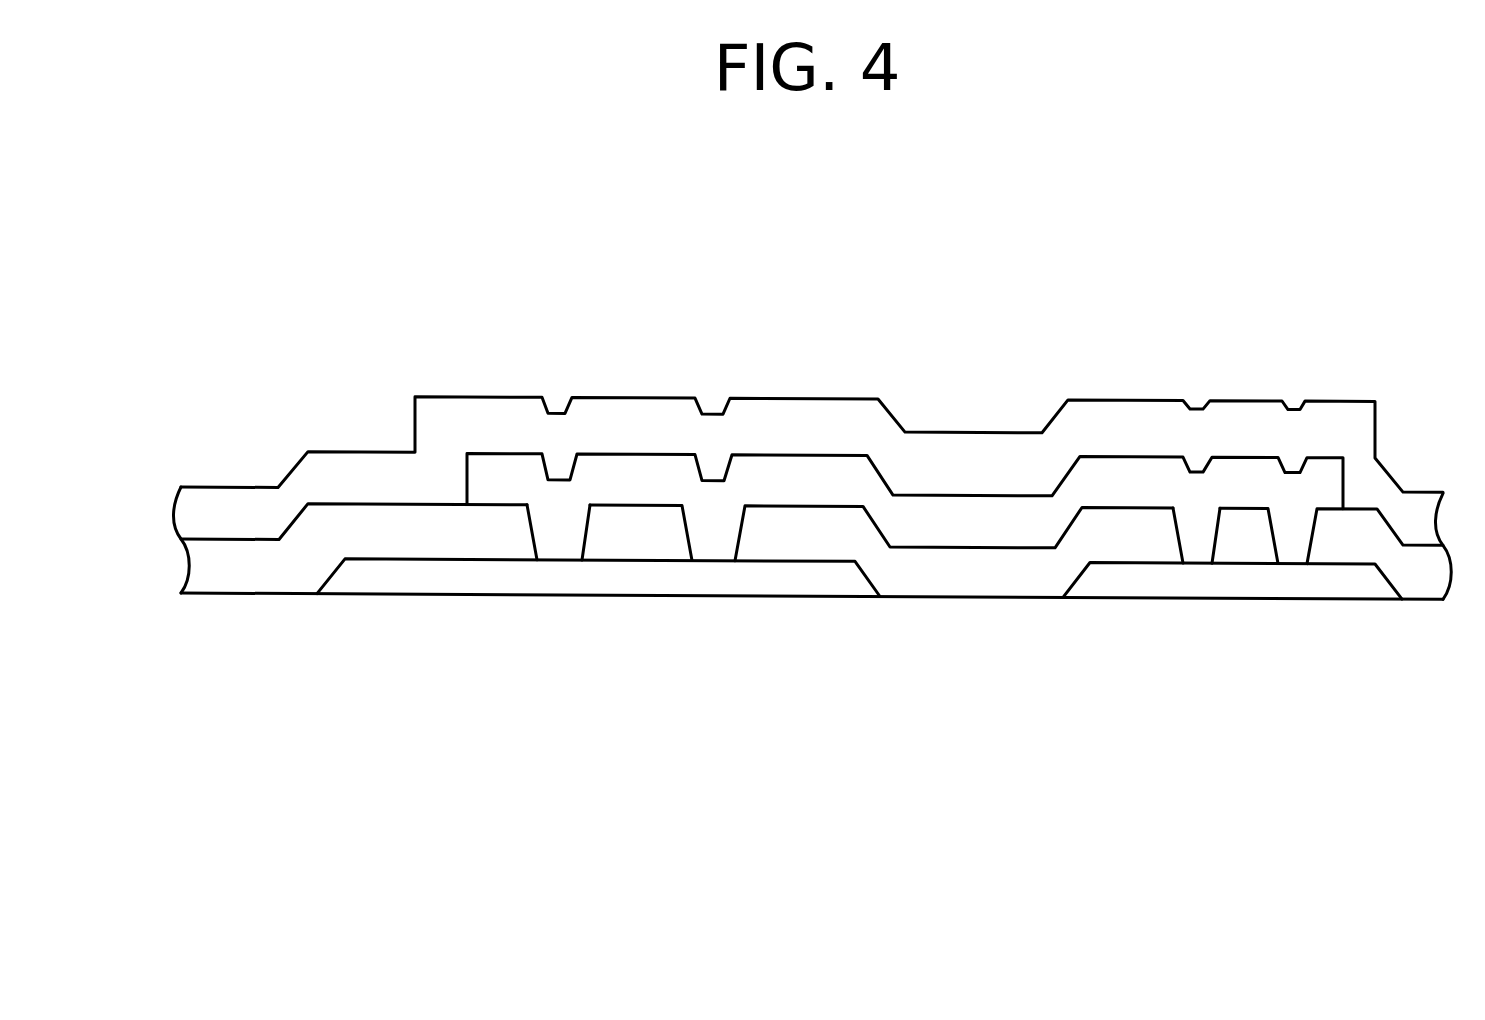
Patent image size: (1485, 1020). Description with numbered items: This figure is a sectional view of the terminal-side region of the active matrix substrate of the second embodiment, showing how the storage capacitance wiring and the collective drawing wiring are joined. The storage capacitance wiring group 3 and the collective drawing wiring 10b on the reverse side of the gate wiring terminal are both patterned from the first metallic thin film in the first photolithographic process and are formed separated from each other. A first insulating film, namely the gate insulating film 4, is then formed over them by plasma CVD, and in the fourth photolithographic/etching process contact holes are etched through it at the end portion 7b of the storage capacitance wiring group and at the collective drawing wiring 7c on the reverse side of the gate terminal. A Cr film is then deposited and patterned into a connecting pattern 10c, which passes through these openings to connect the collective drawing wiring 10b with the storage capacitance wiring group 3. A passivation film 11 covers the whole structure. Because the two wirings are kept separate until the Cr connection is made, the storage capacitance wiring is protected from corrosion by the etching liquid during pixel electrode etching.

The storage capacitance wiring group 3 is at (589, 585).
The first insulating film (gate insulating film) 4 is at (226, 582).
The end portion of the storage capacitance wiring group 7b is at (557, 523).
The collective drawing wiring contact hole 7c is at (1195, 525).
The collective drawing wiring on the reverse side of the gate wiring terminal 10b is at (1222, 585).
The pattern for connecting the collective drawing wiring and the storage capacitance 10c is at (770, 473).
The passivation film 11 is at (220, 504).